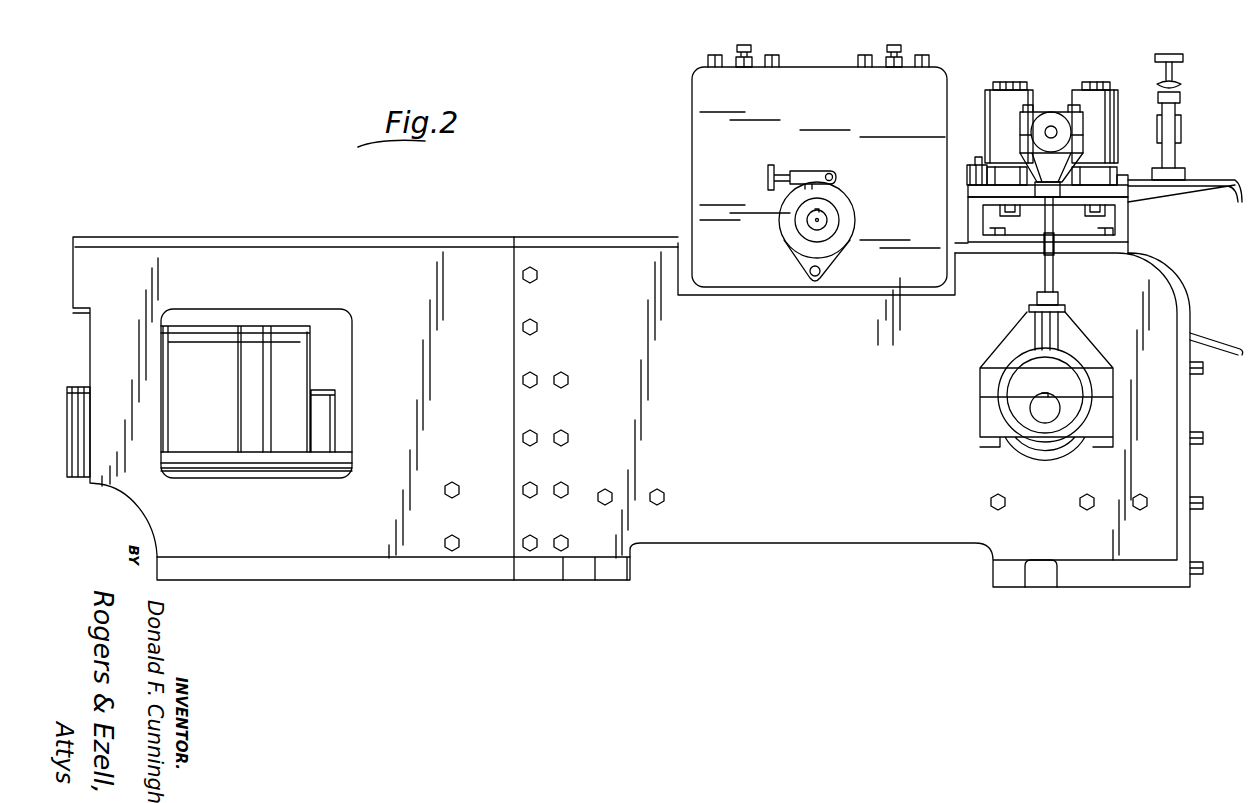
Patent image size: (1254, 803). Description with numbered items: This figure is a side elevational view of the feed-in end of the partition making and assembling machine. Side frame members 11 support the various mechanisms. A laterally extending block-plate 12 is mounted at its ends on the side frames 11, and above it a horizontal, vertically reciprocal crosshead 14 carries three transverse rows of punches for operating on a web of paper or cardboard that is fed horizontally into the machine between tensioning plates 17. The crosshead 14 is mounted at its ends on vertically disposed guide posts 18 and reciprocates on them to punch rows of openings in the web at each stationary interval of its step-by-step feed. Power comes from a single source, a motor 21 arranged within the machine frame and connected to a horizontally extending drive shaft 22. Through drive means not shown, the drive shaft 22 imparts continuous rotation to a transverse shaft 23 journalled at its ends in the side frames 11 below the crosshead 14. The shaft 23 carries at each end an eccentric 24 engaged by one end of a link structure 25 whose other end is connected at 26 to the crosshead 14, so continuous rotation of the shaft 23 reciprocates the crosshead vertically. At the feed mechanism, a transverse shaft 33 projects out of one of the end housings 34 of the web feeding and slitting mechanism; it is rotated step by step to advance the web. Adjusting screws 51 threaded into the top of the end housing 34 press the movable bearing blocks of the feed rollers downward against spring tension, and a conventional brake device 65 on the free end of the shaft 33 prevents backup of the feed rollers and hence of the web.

The side frame members 11 is at (1158, 300).
The block-plate 12 is at (1128, 232).
The crosshead 14 is at (1119, 106).
The tensioning plates 17 is at (1195, 180).
The guide posts 18 is at (1007, 82).
The motor 21 is at (215, 333).
The drive shaft 22 is at (337, 461).
The transverse shaft 23 is at (1045, 420).
The eccentric 24 is at (1065, 381).
The link structure 25 is at (1058, 322).
The connection to crosshead 26 is at (1052, 130).
The transverse shaft 33 is at (807, 224).
The end housing 34 is at (690, 158).
The adjusting screws 51 is at (740, 49).
The brake device 65 is at (838, 209).